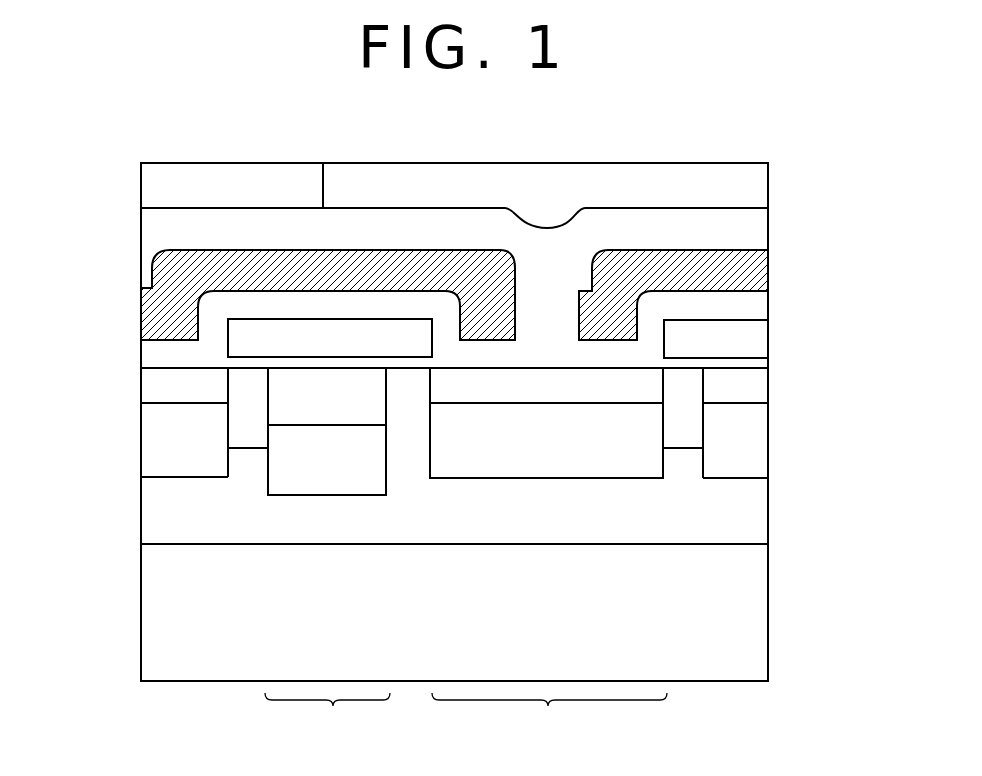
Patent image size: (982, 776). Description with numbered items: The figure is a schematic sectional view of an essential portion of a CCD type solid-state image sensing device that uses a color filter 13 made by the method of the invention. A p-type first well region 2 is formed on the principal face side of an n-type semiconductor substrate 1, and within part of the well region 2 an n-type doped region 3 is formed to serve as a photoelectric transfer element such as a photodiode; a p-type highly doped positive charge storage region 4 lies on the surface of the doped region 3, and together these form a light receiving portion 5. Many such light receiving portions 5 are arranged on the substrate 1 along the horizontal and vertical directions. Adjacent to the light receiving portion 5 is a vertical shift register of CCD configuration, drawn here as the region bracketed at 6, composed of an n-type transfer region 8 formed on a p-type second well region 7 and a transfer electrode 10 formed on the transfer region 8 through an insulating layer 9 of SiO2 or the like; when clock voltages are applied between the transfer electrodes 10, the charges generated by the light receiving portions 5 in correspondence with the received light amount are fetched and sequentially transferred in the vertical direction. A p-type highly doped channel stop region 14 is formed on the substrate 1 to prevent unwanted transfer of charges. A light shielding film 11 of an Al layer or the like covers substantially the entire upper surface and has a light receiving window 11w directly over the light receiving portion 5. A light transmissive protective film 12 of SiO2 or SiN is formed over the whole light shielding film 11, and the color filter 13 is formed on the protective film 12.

The n-type semiconductor substrate 1 is at (753, 612).
The p-type first well region 2 is at (750, 517).
The n-type doped region 3 is at (648, 462).
The p-type highly doped positive charge storage region 4 is at (520, 378).
The light receiving portion 5 is at (549, 715).
The first transistor portion 6 is at (327, 715).
The p-type second well region 7 is at (278, 480).
The n-type transfer region 8 is at (277, 390).
The insulating layer 9 is at (363, 363).
The transfer electrode 10 is at (283, 327).
The light shielding film 11 is at (212, 257).
The light receiving window 11w is at (578, 299).
The protective film 12 is at (755, 234).
The color filter 13 is at (163, 180).
The p-type highly doped channel stop region 14 is at (240, 437).